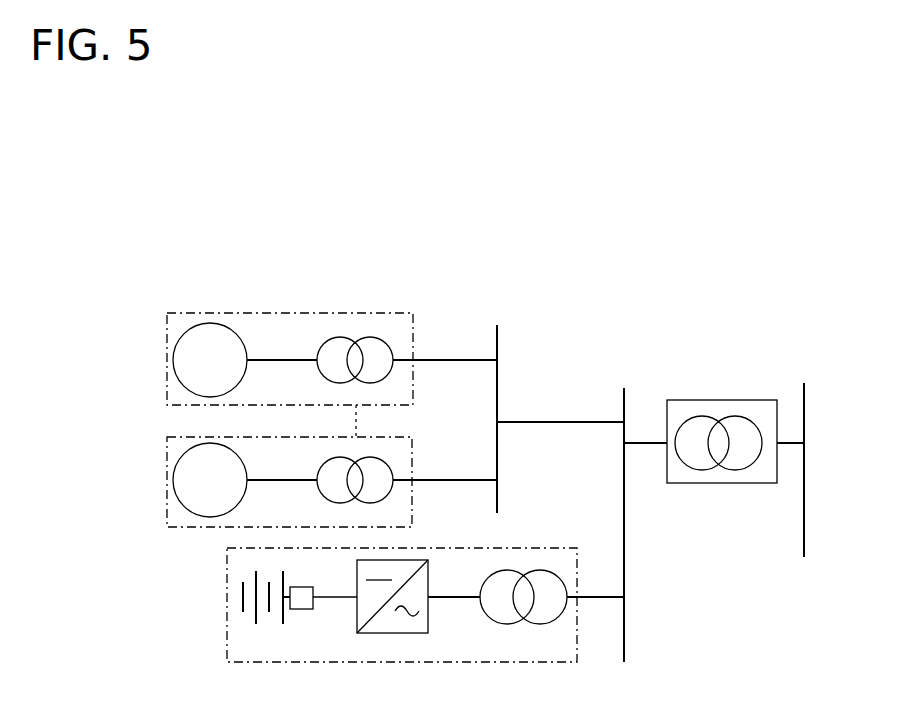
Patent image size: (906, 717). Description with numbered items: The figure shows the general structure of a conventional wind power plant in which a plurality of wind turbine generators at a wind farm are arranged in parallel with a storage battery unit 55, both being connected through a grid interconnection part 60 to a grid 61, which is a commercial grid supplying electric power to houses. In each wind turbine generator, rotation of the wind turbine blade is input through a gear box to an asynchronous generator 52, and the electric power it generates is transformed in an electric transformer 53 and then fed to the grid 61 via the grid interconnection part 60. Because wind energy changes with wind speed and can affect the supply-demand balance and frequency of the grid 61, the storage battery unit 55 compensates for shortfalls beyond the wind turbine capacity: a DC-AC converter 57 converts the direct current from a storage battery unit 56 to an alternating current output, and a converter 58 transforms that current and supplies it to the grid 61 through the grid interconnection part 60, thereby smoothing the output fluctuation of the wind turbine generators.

The asynchronous generator 52 is at (211, 322).
The electric transformer 53 is at (370, 337).
The storage battery unit 55 is at (555, 548).
The storage battery unit 56 is at (243, 598).
The DC-AC converter 57 is at (422, 560).
The converter 58 is at (507, 570).
The grid interconnection part 60 is at (708, 400).
The grid 61 is at (803, 394).